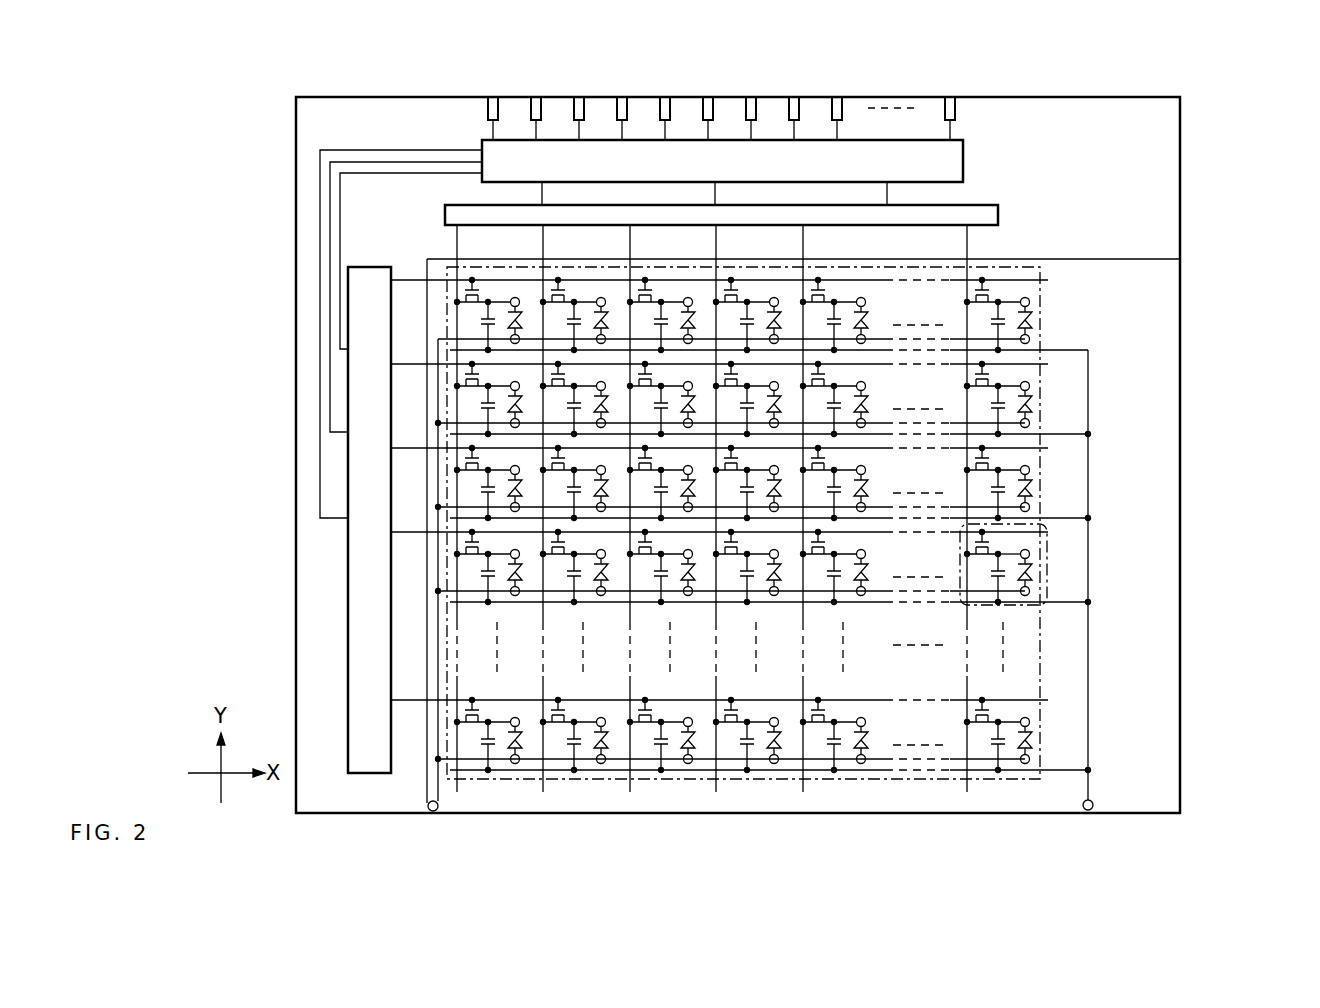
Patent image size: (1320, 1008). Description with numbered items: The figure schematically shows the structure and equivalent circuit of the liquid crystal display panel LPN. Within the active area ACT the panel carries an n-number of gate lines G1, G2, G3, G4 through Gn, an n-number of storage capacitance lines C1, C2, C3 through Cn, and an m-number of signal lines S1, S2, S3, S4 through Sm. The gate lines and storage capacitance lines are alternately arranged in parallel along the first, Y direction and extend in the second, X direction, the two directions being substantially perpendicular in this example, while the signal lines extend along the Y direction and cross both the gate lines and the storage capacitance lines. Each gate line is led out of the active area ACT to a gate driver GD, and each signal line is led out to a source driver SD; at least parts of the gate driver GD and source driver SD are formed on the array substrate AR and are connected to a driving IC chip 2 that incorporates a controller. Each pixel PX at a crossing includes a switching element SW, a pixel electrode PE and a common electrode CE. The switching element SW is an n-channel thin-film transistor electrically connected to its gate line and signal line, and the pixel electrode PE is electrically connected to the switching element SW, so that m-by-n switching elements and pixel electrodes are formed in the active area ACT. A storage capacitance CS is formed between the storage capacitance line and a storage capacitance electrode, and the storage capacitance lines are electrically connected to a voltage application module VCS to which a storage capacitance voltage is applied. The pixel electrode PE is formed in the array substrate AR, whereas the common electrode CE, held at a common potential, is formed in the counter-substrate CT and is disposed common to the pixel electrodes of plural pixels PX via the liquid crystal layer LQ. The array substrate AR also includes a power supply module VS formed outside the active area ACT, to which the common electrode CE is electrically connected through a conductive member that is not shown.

The driving IC chip 2 is at (963, 140).
The liquid crystal display panel LPN is at (1210, 113).
The source driver SD is at (1000, 212).
The gate driver GD is at (348, 636).
The counter-substrate CT is at (1147, 259).
The array substrate AR is at (360, 806).
The active area ACT is at (1040, 380).
The gate line G1 is at (405, 278).
The gate line G2 is at (404, 363).
The gate line G3 is at (404, 447).
The gate line G4 is at (404, 531).
The gate line Gn is at (402, 699).
The signal line S1 is at (460, 246).
The signal line S2 is at (546, 246).
The signal line S3 is at (633, 246).
The signal line S4 is at (719, 246).
The signal line Sm is at (970, 246).
The storage capacitance line C1 is at (1064, 348).
The storage capacitance line C2 is at (1064, 432).
The storage capacitance line C3 is at (1064, 516).
The storage capacitance line Cn is at (1064, 766).
The pixel PX is at (1042, 607).
The switching element SW is at (963, 547).
The storage capacitance CS is at (986, 572).
The pixel electrode PE is at (1030, 551).
The liquid crystal layer LQ is at (1032, 572).
The common electrode CE is at (1030, 592).
The power supply module VS is at (438, 810).
The voltage application module VCS is at (1093, 801).